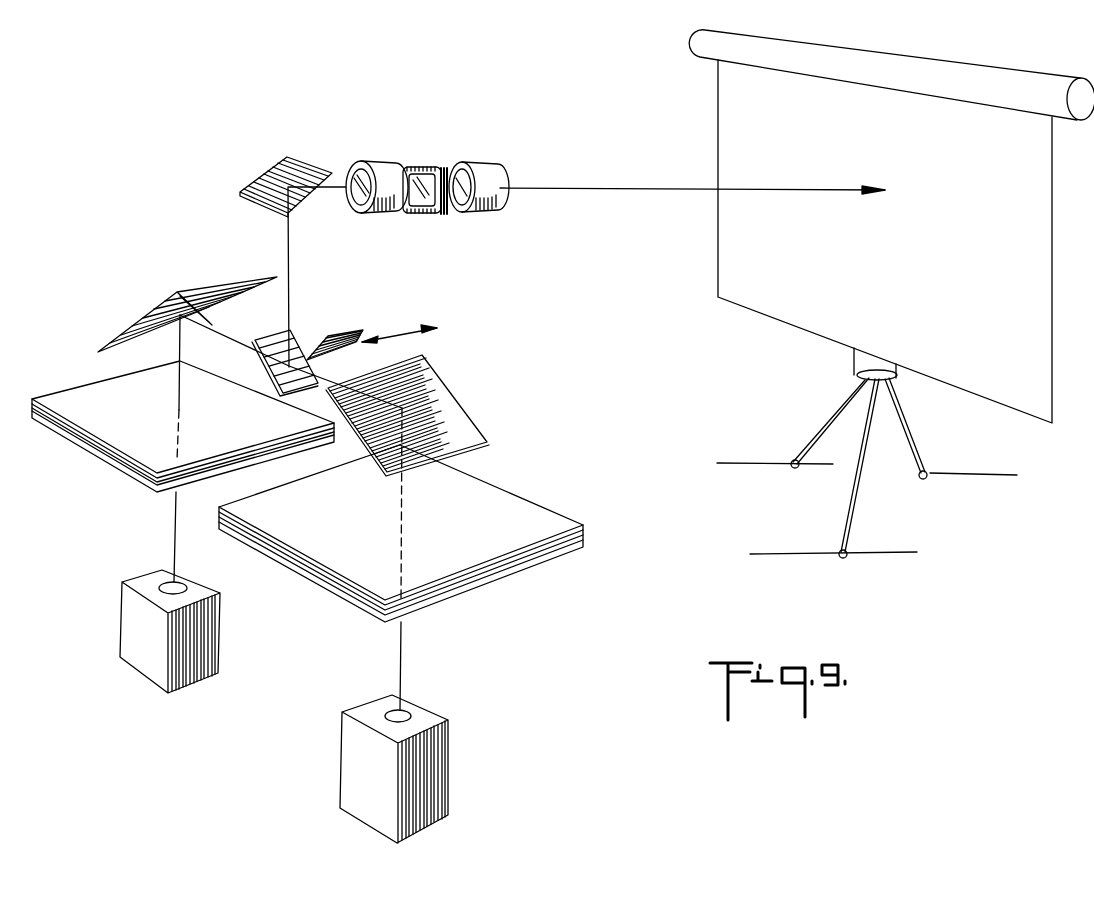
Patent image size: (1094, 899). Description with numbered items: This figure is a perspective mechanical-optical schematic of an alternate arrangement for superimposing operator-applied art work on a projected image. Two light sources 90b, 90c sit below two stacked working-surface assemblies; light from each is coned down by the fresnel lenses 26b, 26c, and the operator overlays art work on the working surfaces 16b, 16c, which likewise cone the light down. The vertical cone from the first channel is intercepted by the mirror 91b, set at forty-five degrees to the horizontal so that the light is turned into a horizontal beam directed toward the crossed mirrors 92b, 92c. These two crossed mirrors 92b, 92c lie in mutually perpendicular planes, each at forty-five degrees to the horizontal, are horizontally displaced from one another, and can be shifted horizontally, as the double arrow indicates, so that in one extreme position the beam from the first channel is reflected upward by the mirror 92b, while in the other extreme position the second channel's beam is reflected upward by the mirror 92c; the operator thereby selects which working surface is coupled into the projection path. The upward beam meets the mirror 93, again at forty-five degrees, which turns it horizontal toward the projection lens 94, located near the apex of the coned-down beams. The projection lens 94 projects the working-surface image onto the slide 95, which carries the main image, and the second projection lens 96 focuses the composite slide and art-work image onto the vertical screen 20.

The screen 20 is at (728, 133).
The mirror 93 is at (278, 168).
The projection lens 94 is at (375, 163).
The slide 95 is at (440, 217).
The second projection lens 96 is at (478, 170).
The mirror 91b is at (162, 295).
The crossed mirror 92b is at (273, 368).
The crossed mirror 92c is at (358, 330).
The working surface 16b is at (55, 397).
The fresnel lens 26b is at (107, 462).
The working surface 16c is at (473, 555).
The fresnel lens 26c is at (552, 553).
The light source 90b is at (215, 634).
The light source 90c is at (442, 751).